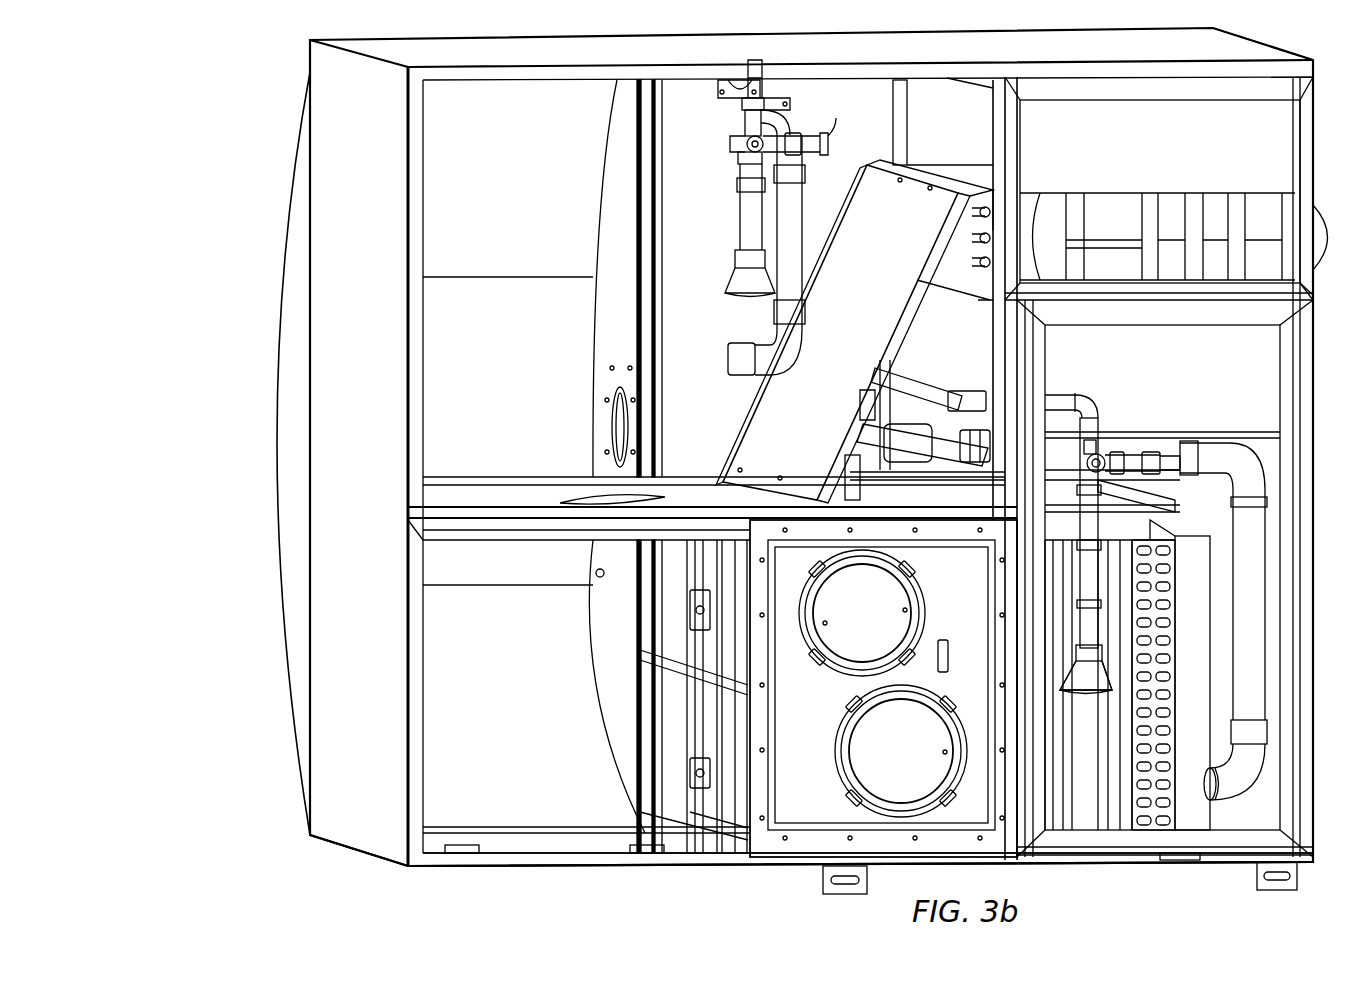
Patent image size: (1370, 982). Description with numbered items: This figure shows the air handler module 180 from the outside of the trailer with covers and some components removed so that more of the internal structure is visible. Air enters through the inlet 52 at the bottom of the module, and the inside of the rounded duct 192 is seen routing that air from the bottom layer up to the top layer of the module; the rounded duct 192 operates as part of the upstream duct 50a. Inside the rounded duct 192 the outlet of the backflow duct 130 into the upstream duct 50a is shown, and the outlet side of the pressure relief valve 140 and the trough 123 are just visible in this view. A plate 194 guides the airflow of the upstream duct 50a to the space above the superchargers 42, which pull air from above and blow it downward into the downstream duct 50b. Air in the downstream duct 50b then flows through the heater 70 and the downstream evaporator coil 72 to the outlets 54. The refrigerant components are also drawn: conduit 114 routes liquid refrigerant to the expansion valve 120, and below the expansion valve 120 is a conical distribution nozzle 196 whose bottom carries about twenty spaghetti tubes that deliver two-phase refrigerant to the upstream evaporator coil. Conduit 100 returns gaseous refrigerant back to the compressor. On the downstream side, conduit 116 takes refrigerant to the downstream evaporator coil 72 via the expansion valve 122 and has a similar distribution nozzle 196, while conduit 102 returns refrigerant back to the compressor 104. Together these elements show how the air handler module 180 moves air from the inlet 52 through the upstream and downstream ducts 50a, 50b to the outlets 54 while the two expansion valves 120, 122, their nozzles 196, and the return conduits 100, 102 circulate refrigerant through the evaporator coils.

The air handler module 180 is at (250, 112).
The rounded duct 192 is at (278, 430).
The inlet 52 is at (566, 840).
The upstream duct 50a is at (531, 347).
The downstream duct 50b is at (1200, 364).
The backflow duct 130 is at (616, 426).
The trough 123 is at (572, 502).
The pressure relief valve 140 is at (660, 762).
The outlets 54 is at (904, 605).
The superchargers 42 is at (1172, 212).
The downstream evaporator coil 72 is at (1125, 592).
The heater 70 is at (1195, 630).
The compressor 104 is at (1062, 400).
The expansion valve 122 is at (1112, 458).
The conduit 102 is at (1250, 670).
The conical distribution nozzle 196 is at (745, 276).
The expansion valve 120 is at (746, 146).
The conduit 100 is at (797, 206).
The conduit 114 is at (752, 92).
The plate 194 is at (784, 428).
The conduit 116 is at (926, 386).